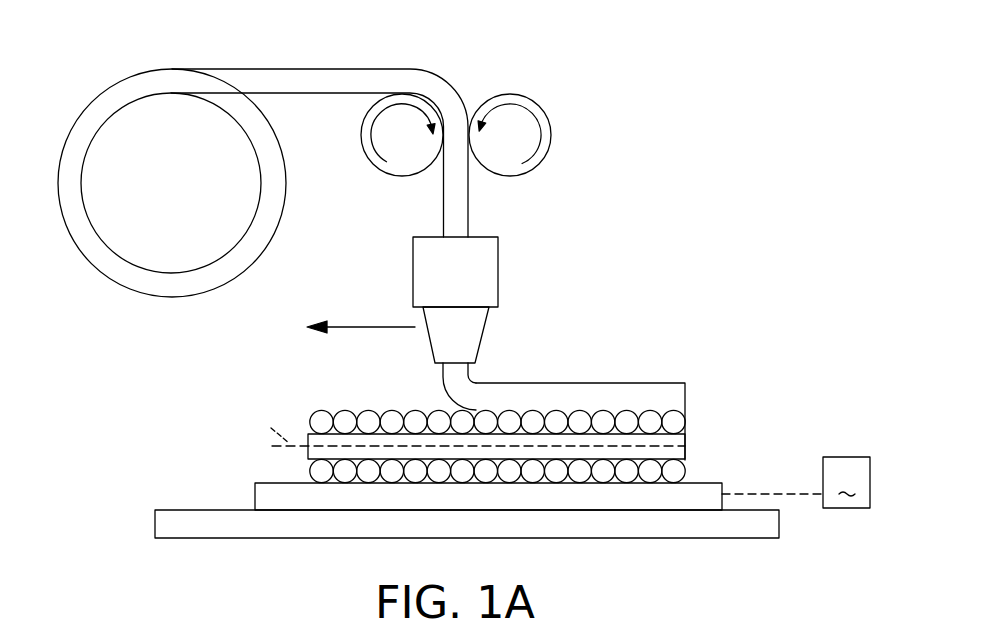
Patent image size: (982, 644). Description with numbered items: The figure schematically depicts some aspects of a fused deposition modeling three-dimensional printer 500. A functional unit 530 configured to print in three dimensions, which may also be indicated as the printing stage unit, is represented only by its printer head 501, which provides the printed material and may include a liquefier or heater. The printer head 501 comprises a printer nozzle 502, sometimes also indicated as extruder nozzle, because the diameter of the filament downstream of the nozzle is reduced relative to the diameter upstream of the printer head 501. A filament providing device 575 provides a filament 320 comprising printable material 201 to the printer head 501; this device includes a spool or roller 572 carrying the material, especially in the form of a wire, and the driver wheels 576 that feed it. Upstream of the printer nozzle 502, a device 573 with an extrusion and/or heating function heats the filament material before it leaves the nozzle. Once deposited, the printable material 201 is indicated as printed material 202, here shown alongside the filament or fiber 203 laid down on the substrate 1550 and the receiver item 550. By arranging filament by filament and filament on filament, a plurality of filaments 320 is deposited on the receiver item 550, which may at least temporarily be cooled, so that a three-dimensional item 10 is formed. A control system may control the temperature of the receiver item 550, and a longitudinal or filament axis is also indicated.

The 3D printer 500 is at (722, 217).
The spool or roller 572 is at (110, 57).
The extrusion and/or heating device 573 is at (534, 204).
The driver wheels 576 is at (466, 61).
The filament providing device 575 is at (571, 94).
The printer head 501 is at (485, 277).
The printer nozzle 502 is at (418, 373).
The functional unit configured to 3D print 530 is at (143, 340).
The 3D item 10 is at (751, 404).
The printable material 201 is at (470, 364).
The printed material 202 is at (618, 391).
The filament strand 203 is at (658, 392).
The filament 320 is at (665, 448).
The substrate 1550 is at (221, 456).
The receiver item 550 is at (225, 496).